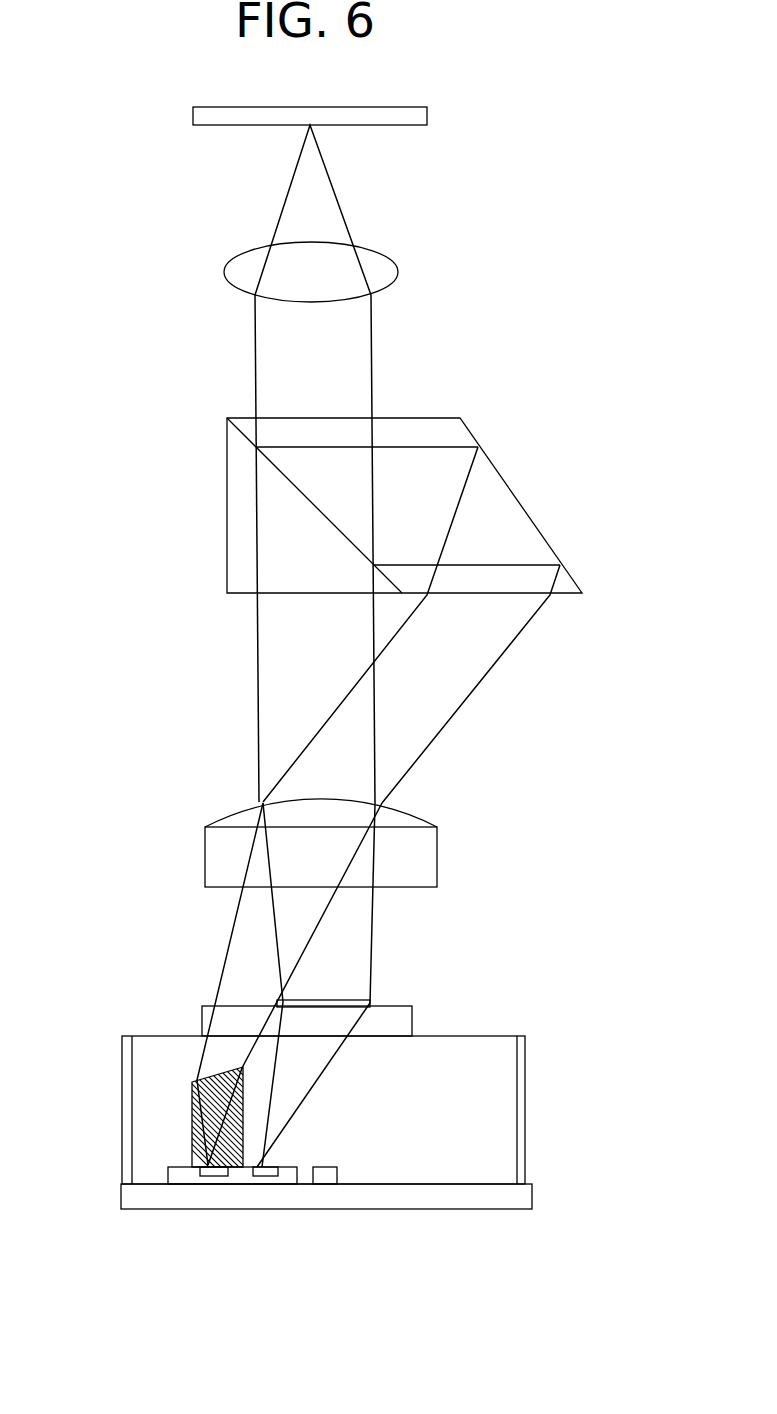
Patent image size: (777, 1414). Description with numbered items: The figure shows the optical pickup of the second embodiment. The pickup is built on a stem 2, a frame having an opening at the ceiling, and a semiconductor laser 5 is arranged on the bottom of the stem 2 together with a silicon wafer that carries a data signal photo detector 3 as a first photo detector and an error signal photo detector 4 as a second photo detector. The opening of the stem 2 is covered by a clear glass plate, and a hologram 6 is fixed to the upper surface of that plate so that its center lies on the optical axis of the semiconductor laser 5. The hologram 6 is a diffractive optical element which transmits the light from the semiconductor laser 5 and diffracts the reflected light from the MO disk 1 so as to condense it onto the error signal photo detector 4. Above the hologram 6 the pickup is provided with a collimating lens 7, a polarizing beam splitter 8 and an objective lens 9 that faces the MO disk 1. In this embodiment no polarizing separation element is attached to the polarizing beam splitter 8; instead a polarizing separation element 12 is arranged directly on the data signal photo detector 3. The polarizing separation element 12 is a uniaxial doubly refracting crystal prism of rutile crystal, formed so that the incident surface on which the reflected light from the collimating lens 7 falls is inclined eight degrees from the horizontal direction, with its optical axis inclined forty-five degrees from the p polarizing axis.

The MO disk 1 is at (422, 113).
The objective lens 9 is at (390, 268).
The polarizing beam splitter 8 is at (493, 493).
The collimating lens 7 is at (423, 857).
The hologram 6 is at (342, 1000).
The polarizing separation element 12 is at (192, 1122).
The data signal photo detector 3 is at (215, 1173).
The error signal photo detector 4 is at (267, 1173).
The semiconductor laser 5 is at (328, 1178).
The stem 2 is at (527, 1197).